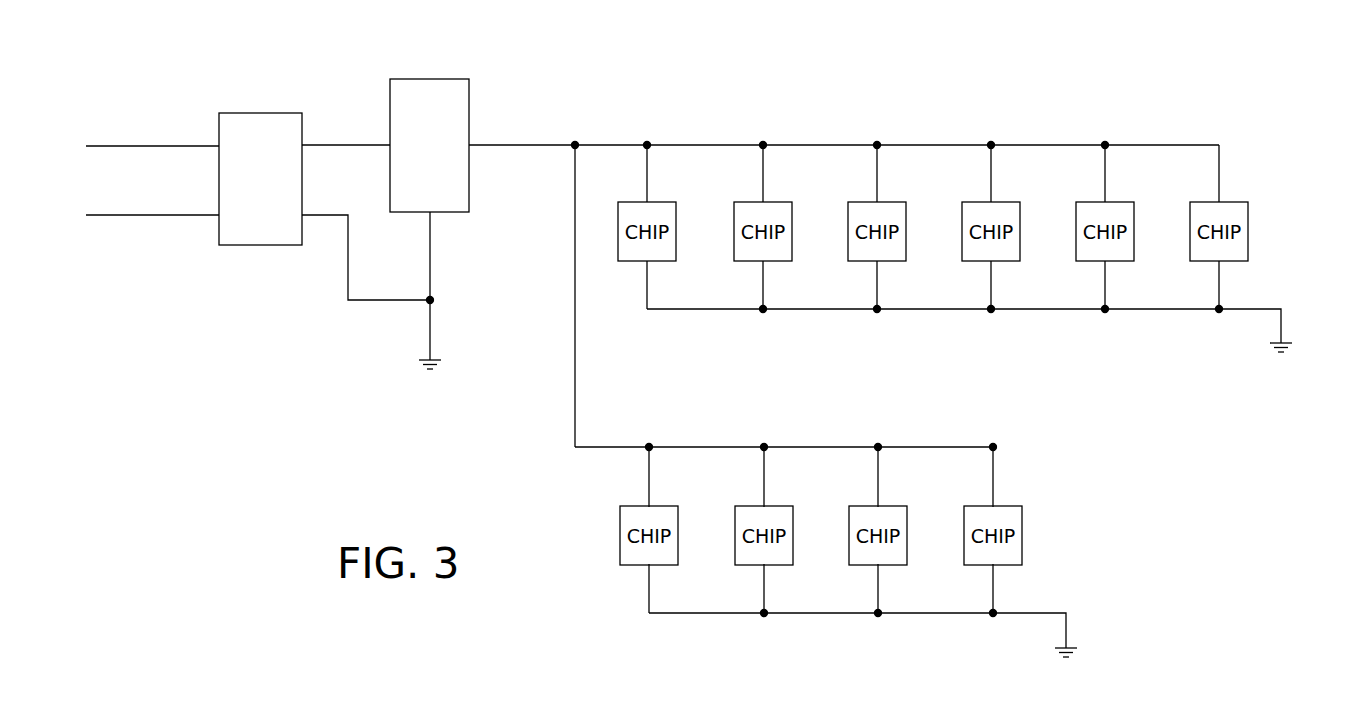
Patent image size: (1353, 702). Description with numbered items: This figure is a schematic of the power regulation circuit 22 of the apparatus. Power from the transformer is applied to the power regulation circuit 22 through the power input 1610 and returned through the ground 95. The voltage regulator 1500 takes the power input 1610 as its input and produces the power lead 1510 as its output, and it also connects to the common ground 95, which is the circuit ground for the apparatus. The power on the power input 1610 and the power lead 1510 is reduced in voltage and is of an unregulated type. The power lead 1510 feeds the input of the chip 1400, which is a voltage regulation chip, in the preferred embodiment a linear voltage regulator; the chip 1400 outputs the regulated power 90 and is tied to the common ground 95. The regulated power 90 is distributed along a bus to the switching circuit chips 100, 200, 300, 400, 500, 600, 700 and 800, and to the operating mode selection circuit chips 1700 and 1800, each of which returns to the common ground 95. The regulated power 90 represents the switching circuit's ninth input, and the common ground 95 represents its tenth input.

The power regulation circuit 22 is at (356, 414).
The power input 1610 is at (155, 146).
The common ground 95 is at (128, 215).
The voltage regulator 1500 is at (262, 113).
The power lead 1510 is at (345, 145).
The chip 1400 is at (428, 79).
The regulated power 90 is at (523, 145).
The chip 100 is at (662, 202).
The chip 200 is at (778, 202).
The chip 300 is at (892, 202).
The chip 400 is at (1006, 202).
The chip 500 is at (1120, 202).
The chip 600 is at (1236, 202).
The chip 700 is at (664, 507).
The chip 800 is at (779, 507).
The chip 1700 is at (893, 507).
The chip 1800 is at (1009, 507).